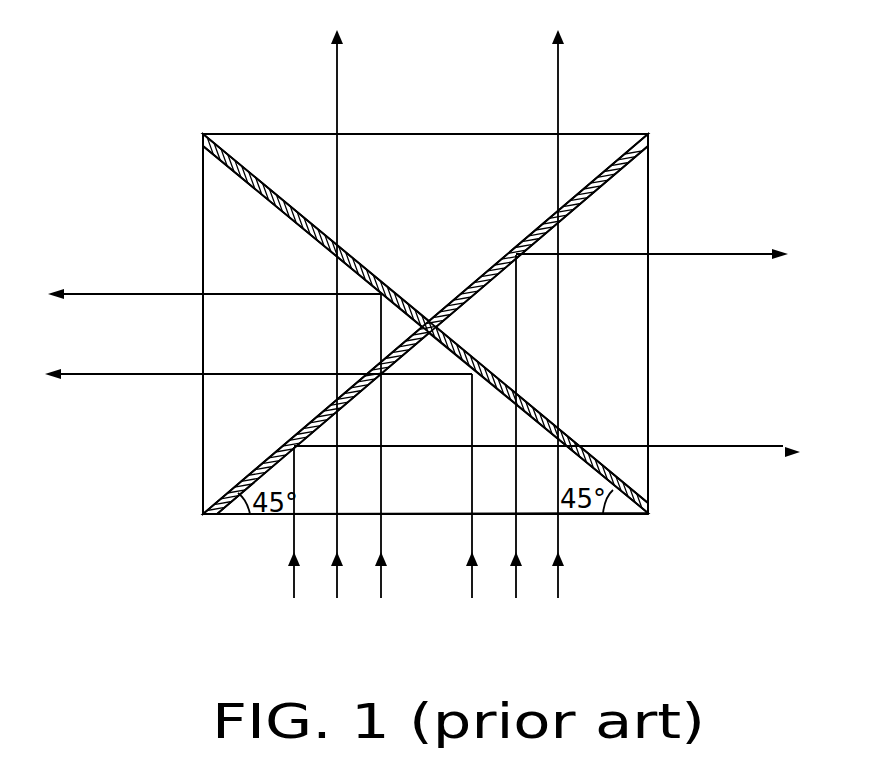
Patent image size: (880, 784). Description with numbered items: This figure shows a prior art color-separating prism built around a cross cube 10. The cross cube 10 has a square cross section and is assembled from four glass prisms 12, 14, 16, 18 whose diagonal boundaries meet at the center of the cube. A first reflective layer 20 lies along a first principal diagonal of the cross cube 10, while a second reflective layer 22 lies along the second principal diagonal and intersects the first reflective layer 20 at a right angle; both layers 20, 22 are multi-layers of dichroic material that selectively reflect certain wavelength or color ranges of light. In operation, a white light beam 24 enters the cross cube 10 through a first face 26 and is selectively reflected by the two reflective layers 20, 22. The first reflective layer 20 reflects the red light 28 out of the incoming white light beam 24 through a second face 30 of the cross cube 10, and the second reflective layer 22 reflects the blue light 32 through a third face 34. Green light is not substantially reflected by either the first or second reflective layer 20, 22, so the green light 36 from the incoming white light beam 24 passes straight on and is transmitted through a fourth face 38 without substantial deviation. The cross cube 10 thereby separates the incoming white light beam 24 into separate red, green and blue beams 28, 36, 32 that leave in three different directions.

The cross cube 10 is at (165, 179).
The glass prism 12 is at (282, 337).
The glass prism 14 is at (433, 221).
The glass prism 16 is at (553, 337).
The glass prism 18 is at (428, 431).
The first reflective layer 20 is at (291, 196).
The second reflective layer 22 is at (523, 232).
The white light beam 24 is at (448, 669).
The first face 26 is at (428, 516).
The red light 28 is at (136, 367).
The second face 30 is at (203, 266).
The blue light 32 is at (790, 381).
The third face 34 is at (647, 327).
The green light 36 is at (466, 76).
The fourth face 38 is at (478, 134).